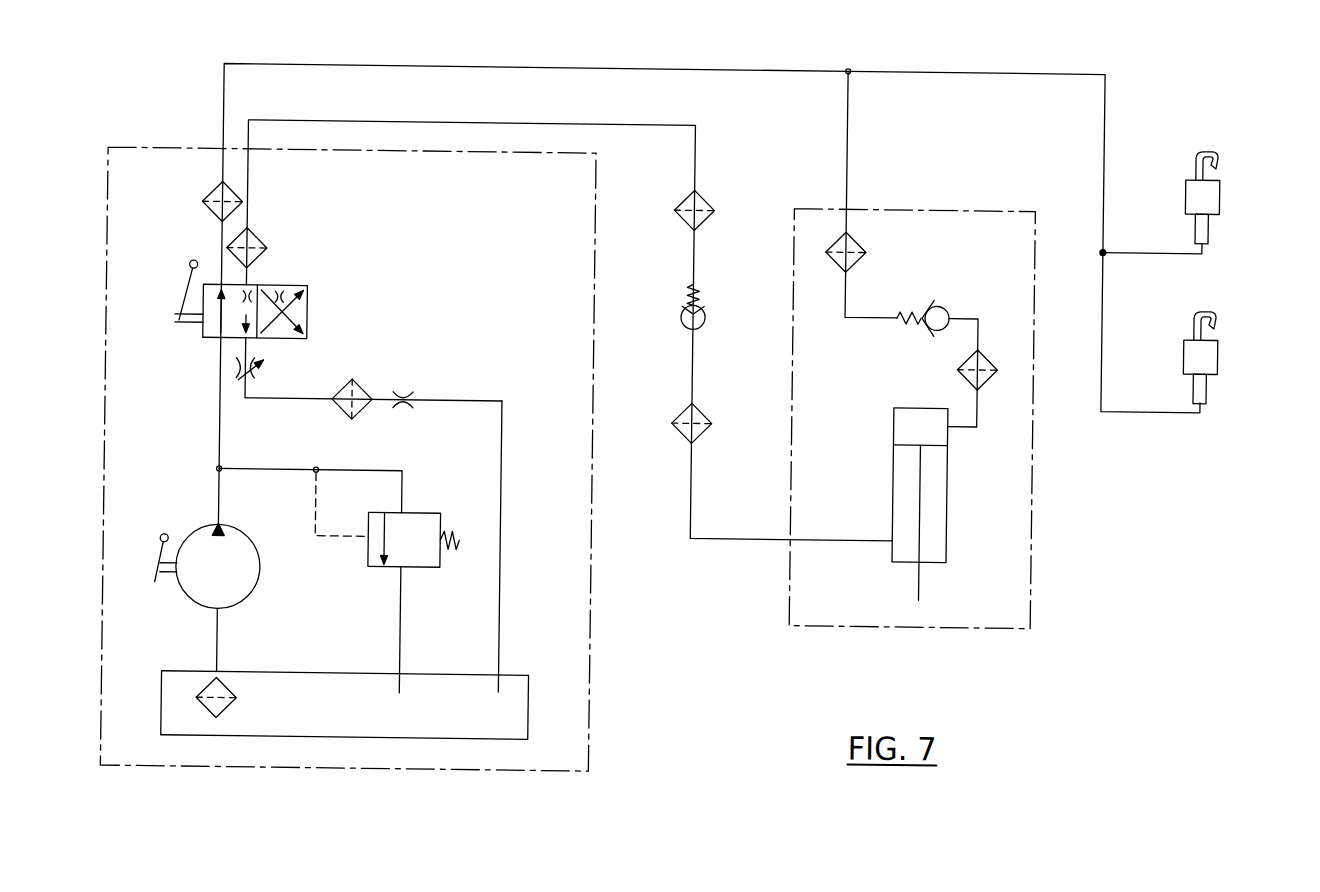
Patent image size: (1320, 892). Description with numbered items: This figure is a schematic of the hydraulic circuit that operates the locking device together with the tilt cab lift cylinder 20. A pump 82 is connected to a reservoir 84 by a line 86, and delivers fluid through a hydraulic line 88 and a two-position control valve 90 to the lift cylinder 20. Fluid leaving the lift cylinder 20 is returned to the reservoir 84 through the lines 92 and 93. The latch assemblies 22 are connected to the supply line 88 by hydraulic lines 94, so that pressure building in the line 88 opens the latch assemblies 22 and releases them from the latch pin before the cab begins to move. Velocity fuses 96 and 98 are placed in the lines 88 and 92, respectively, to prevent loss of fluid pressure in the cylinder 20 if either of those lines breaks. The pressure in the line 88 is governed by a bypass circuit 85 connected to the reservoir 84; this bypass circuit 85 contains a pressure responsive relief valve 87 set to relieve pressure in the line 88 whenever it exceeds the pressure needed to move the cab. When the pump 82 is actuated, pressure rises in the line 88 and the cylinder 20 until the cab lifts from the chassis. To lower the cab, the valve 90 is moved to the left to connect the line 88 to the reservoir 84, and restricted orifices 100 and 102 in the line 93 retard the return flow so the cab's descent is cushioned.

The tilt cab lift cylinder 20 is at (951, 466).
The latch assemblies 22 is at (1224, 191).
The pump 82 is at (245, 542).
The reservoir 84 is at (290, 681).
The bypass circuit 85 is at (274, 472).
The line 86 is at (219, 635).
The pressure responsive relief valve 87 is at (418, 508).
The hydraulic line 88 is at (617, 69).
The two-position control valve 90 is at (289, 281).
The line 92 is at (665, 125).
The line 93 is at (503, 469).
The hydraulic lines 94 is at (904, 69).
The velocity fuse 96 is at (922, 306).
The velocity fuse 98 is at (686, 308).
The restricted orifice 100 is at (262, 371).
The restricted orifice 102 is at (401, 398).